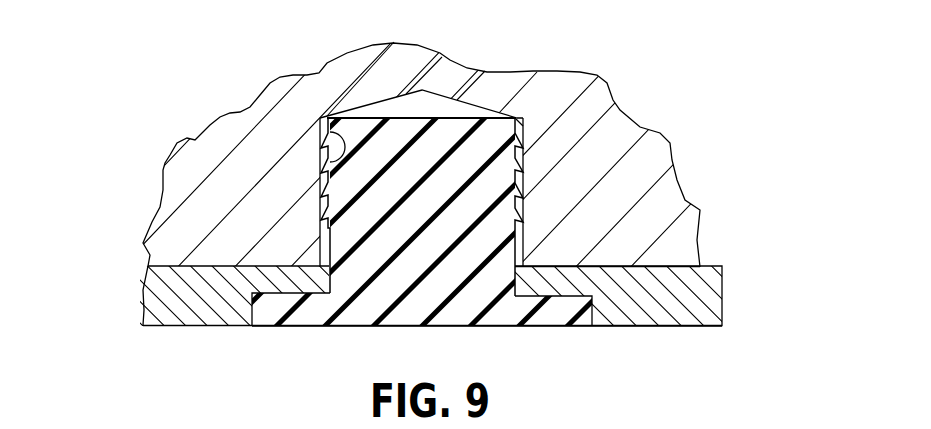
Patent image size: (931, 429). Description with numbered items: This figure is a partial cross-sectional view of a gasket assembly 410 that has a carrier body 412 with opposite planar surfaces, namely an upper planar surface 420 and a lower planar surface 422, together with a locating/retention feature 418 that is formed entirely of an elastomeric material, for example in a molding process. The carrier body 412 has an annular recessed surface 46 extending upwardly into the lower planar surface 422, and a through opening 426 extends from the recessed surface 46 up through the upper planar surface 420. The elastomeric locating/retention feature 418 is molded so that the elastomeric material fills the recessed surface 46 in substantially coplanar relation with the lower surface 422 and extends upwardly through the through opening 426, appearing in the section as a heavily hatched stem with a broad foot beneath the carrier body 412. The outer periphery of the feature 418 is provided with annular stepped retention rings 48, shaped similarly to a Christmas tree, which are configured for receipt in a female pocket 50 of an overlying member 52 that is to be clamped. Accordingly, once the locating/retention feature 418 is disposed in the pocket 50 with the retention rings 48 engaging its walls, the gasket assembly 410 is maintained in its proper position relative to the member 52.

The gasket assembly 410 is at (647, 97).
The carrier body 412 is at (708, 300).
The locating/retention feature 418 is at (540, 94).
The upper planar surface 420 is at (658, 267).
The lower planar surface 422 is at (655, 326).
The through opening 426 is at (330, 268).
The annular recessed surface 46 is at (550, 326).
The annular stepped retention rings 48 is at (533, 260).
The female pocket 50 is at (320, 118).
The overlying member 52 is at (460, 71).